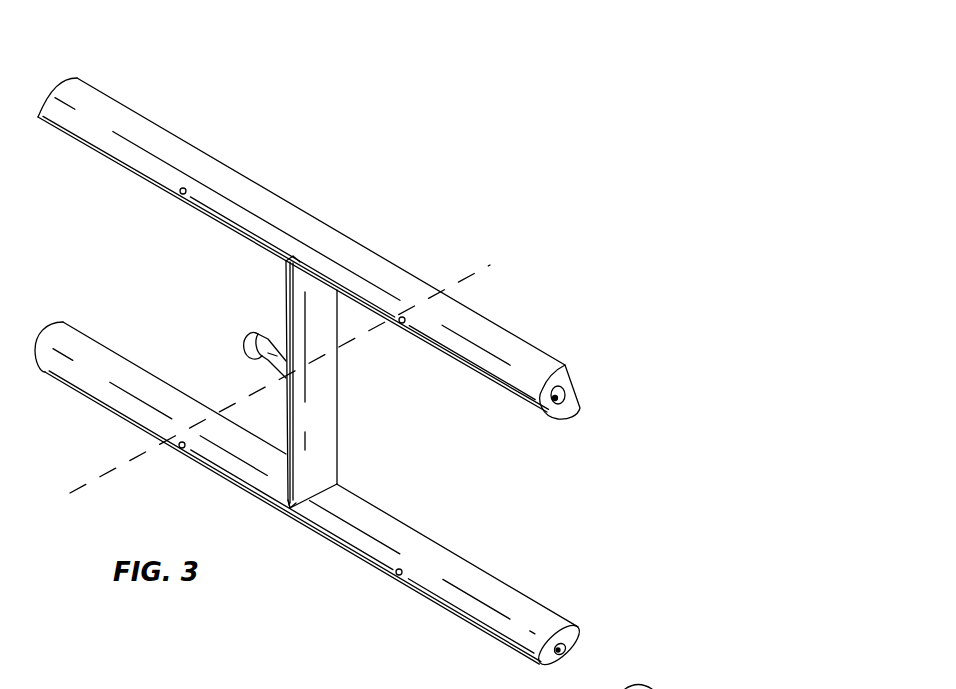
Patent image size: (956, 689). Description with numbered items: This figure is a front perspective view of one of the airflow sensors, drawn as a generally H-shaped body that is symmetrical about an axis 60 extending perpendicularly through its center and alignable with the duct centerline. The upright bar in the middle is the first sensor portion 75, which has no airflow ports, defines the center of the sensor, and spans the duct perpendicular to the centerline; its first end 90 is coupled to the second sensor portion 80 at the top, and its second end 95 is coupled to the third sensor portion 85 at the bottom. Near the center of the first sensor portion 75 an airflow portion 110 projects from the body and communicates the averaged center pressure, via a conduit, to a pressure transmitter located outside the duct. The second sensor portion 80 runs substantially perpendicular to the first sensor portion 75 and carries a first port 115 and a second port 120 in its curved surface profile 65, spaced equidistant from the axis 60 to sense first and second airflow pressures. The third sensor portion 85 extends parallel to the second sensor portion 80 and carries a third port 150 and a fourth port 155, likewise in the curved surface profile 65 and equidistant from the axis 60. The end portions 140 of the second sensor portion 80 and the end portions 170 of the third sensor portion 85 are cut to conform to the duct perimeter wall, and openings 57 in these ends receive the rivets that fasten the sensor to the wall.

The axis 60 is at (494, 264).
The second sensor portion 80 is at (313, 213).
The third sensor portion 85 is at (371, 501).
The first end 90 is at (302, 280).
The first sensor portion 75 is at (339, 393).
The curved surface profile 65 is at (313, 465).
The second end 95 is at (302, 492).
The airflow portion 110 is at (272, 337).
The first port 115 is at (404, 318).
The second port 120 is at (186, 189).
The end portions 140 is at (57, 92).
The third port 150 is at (400, 575).
The fourth port 155 is at (183, 448).
The end portions 170 is at (50, 331).
The openings 57 is at (558, 388).